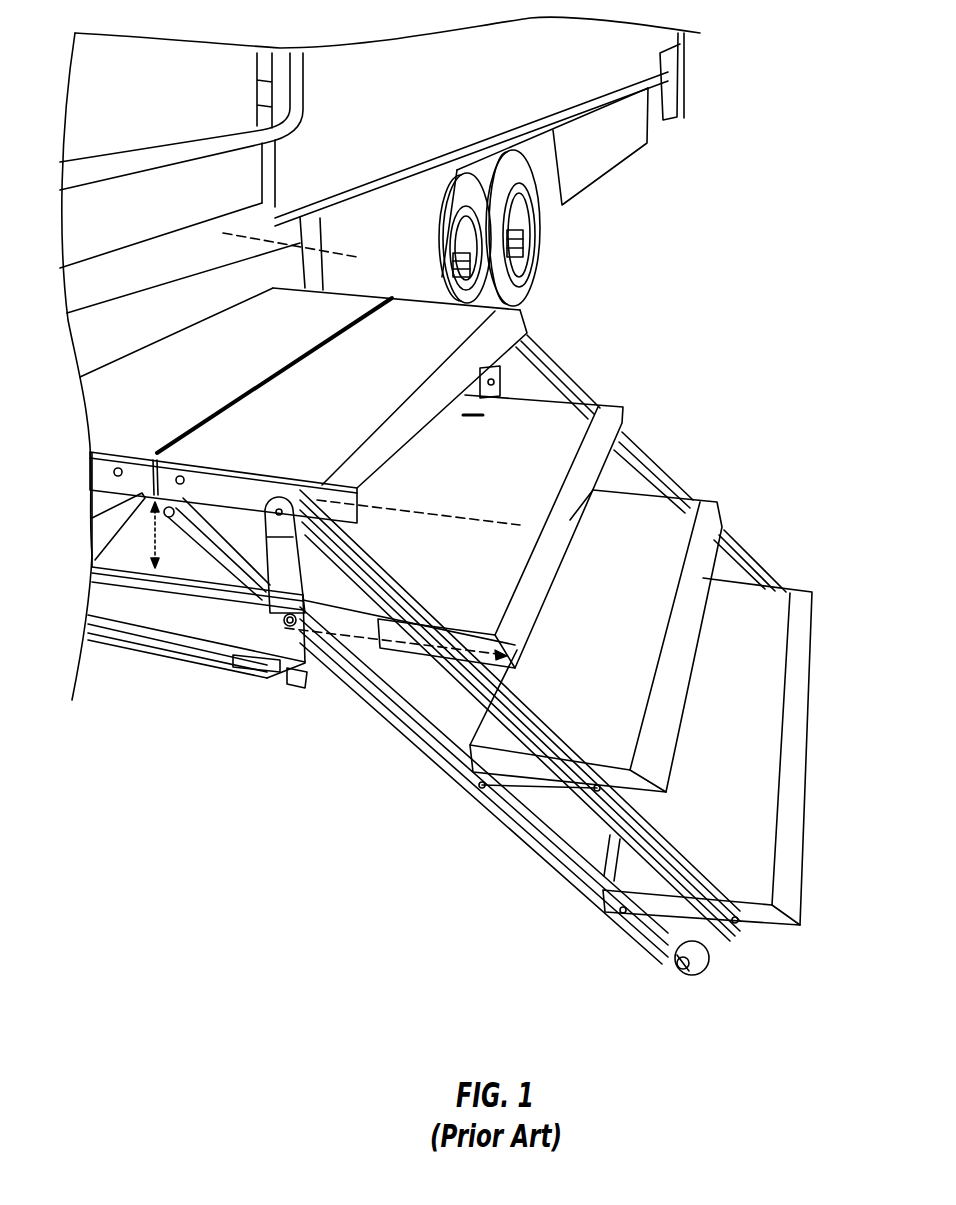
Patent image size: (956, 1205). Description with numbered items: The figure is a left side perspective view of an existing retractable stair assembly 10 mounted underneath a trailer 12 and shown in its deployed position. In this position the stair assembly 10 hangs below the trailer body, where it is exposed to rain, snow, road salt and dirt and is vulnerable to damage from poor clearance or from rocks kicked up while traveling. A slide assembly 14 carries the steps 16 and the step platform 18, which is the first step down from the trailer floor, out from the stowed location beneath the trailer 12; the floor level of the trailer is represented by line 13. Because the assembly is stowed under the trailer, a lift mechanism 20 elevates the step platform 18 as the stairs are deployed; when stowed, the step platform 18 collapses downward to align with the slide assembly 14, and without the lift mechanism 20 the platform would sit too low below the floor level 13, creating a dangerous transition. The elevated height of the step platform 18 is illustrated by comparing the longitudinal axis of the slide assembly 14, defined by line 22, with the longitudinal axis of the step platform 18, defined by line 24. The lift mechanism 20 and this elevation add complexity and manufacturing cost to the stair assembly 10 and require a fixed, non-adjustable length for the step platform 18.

The retractable stair assembly 10 is at (446, 631).
The trailer 12 is at (600, 70).
The floor level line 13 is at (338, 256).
The slide assembly 14 is at (163, 613).
The steps 16 is at (516, 484).
The step platform 18 is at (366, 396).
The lift mechanism 20 is at (293, 556).
The longitudinal axis line of slide assembly 22 is at (383, 660).
The longitudinal axis line of step platform 24 is at (473, 522).